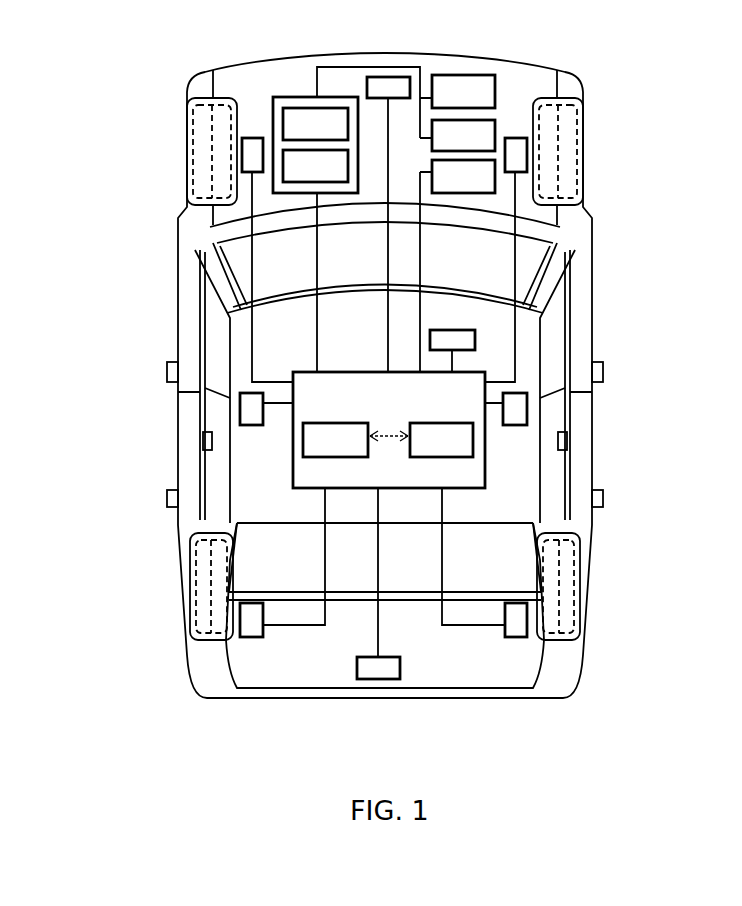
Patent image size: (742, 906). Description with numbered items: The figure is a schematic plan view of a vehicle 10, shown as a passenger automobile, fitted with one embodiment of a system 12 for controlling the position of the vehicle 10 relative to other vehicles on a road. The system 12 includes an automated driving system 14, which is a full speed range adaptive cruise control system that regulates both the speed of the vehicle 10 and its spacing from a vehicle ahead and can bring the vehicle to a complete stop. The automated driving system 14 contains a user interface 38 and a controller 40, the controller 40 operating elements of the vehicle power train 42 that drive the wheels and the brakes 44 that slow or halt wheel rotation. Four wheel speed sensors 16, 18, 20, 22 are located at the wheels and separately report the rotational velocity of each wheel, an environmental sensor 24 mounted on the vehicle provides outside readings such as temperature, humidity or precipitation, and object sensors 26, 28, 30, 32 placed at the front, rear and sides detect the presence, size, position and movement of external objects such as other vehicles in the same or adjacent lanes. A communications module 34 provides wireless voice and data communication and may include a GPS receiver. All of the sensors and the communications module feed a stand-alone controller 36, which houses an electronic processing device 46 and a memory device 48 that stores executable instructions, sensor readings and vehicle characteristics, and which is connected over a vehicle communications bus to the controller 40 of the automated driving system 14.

The vehicle 10 is at (208, 677).
The system 12 is at (131, 285).
The automated driving system 14 is at (282, 95).
The wheel speed sensor 16 is at (252, 158).
The wheel speed sensor 18 is at (516, 158).
The wheel speed sensor 20 is at (252, 615).
The wheel speed sensor 22 is at (527, 615).
The environmental sensor 24 is at (442, 343).
The object sensor 26 is at (377, 87).
The object sensor 28 is at (378, 668).
The object sensor 30 is at (253, 403).
The object sensor 32 is at (527, 405).
The communications module 34 is at (463, 177).
The controller 36 is at (389, 430).
The user interface 38 is at (315, 168).
The controller 40 is at (315, 125).
The vehicle power train 42 is at (463, 93).
The brakes 44 is at (463, 136).
The electronic processing device 46 is at (335, 440).
The memory device 48 is at (441, 440).